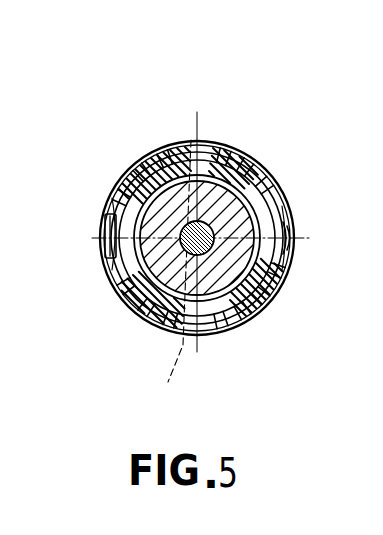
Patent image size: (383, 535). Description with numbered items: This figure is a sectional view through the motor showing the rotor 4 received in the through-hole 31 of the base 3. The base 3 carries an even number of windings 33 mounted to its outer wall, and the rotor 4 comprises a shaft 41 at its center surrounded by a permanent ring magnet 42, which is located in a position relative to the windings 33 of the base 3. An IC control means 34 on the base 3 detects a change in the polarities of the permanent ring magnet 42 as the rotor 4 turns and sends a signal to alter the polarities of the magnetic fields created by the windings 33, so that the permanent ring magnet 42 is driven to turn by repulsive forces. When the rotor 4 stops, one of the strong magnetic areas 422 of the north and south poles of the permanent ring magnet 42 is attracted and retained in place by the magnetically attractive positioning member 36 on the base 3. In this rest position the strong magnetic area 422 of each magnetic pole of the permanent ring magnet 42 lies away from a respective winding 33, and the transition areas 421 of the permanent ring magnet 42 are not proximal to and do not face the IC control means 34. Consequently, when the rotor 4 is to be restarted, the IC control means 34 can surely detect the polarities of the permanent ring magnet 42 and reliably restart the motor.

The base 3 is at (235, 331).
The through-hole 31 is at (278, 187).
The windings 33 is at (258, 167).
The IC control means 34 is at (289, 249).
The magnetically attractive positioning member 36 is at (96, 258).
The rotor 4 is at (183, 243).
The shaft 41 is at (160, 298).
The permanent ring magnet 42 is at (233, 165).
The transition areas 421 is at (191, 140).
The strong magnetic areas 422 is at (118, 183).